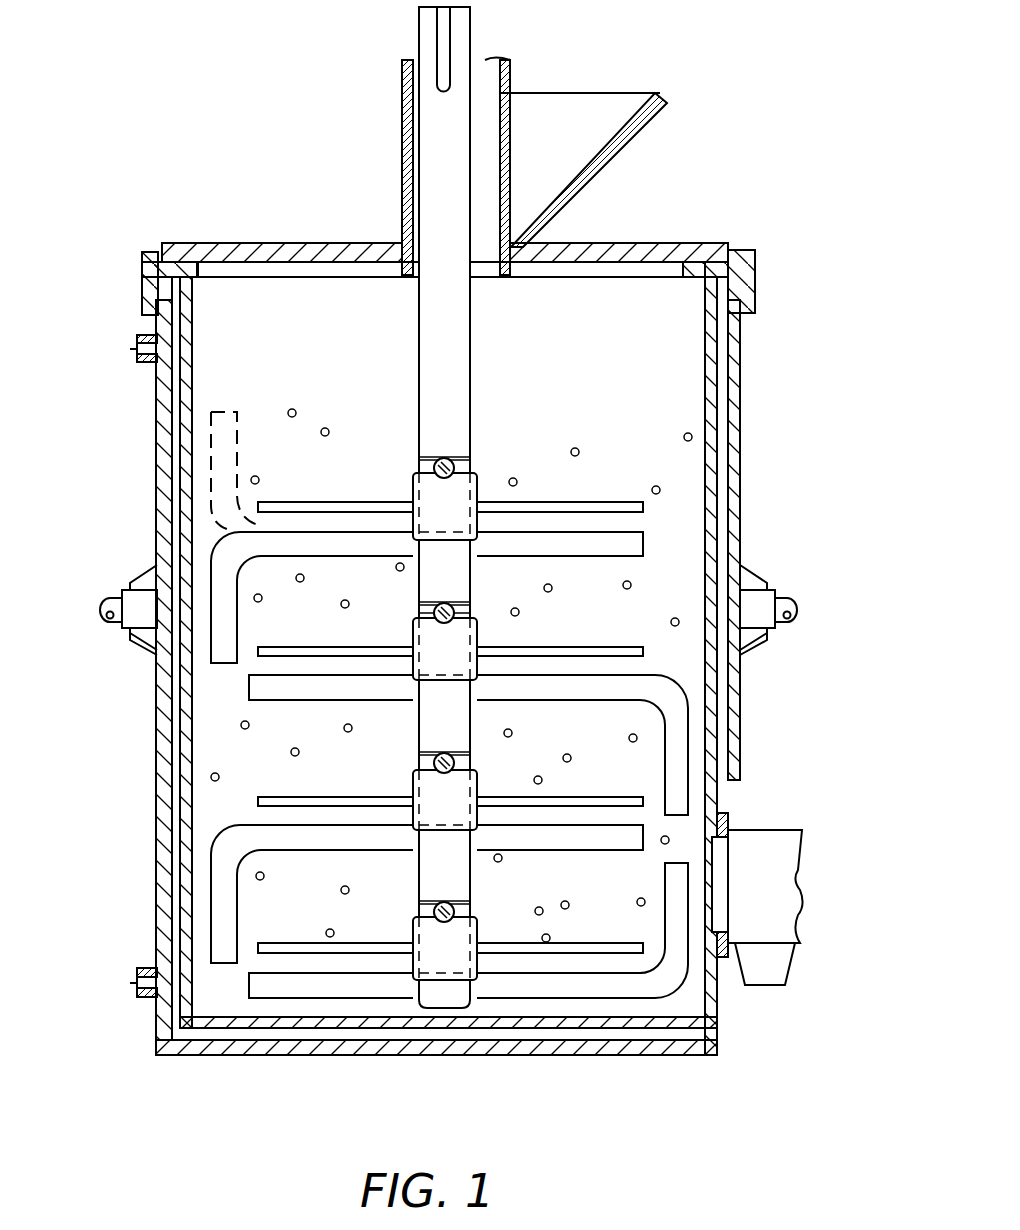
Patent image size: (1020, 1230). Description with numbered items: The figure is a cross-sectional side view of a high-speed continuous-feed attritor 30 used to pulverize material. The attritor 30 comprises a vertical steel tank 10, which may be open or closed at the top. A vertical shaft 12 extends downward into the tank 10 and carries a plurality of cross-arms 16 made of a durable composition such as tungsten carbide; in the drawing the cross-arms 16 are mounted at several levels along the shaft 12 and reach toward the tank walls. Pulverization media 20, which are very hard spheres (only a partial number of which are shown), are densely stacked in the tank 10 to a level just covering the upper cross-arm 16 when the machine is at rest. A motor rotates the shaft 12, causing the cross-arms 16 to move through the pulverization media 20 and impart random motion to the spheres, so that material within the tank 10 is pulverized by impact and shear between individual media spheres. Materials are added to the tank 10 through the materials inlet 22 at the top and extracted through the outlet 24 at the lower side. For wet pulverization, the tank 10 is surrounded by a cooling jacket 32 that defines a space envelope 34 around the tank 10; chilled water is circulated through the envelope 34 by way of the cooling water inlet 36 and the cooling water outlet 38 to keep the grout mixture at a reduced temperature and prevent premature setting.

The attritor 30 is at (157, 140).
The tank 10 is at (722, 340).
The vertical shaft 12 is at (455, 258).
The cross-arms 16 is at (228, 568).
The pulverization media 20 is at (577, 446).
The materials inlet 22 is at (483, 205).
The outlet 24 is at (760, 902).
The cooling jacket 32 is at (735, 530).
The space envelope 34 is at (723, 405).
The cooling water inlet 36 is at (137, 348).
The cooling water outlet 38 is at (148, 988).